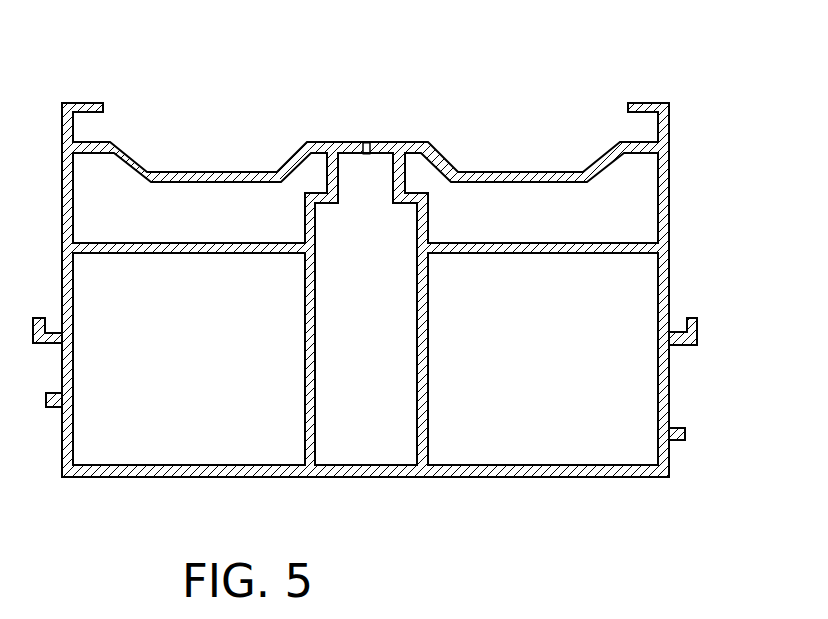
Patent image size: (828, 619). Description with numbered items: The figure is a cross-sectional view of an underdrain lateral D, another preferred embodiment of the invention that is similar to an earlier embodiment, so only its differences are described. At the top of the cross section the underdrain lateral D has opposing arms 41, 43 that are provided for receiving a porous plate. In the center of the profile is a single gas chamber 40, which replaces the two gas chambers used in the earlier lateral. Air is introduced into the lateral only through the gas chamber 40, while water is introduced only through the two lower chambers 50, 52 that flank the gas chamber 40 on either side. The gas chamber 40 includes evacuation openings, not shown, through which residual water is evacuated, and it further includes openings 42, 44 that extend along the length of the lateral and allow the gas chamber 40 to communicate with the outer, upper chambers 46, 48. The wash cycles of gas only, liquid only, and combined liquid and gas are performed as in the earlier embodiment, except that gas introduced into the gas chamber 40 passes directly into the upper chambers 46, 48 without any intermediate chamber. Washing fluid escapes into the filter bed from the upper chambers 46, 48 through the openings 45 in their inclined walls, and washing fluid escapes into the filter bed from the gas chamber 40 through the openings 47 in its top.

The gas chamber 40 is at (375, 442).
The arm 41 is at (88, 103).
The opening 42 is at (342, 207).
The arm 43 is at (645, 103).
The opening 44 is at (388, 207).
The opening 45 is at (290, 162).
The upper chamber 46 is at (192, 197).
The opening 47 is at (366, 143).
The upper chamber 48 is at (550, 198).
The chamber 50 is at (122, 442).
The chamber 52 is at (562, 442).
The underdrain lateral D is at (224, 96).